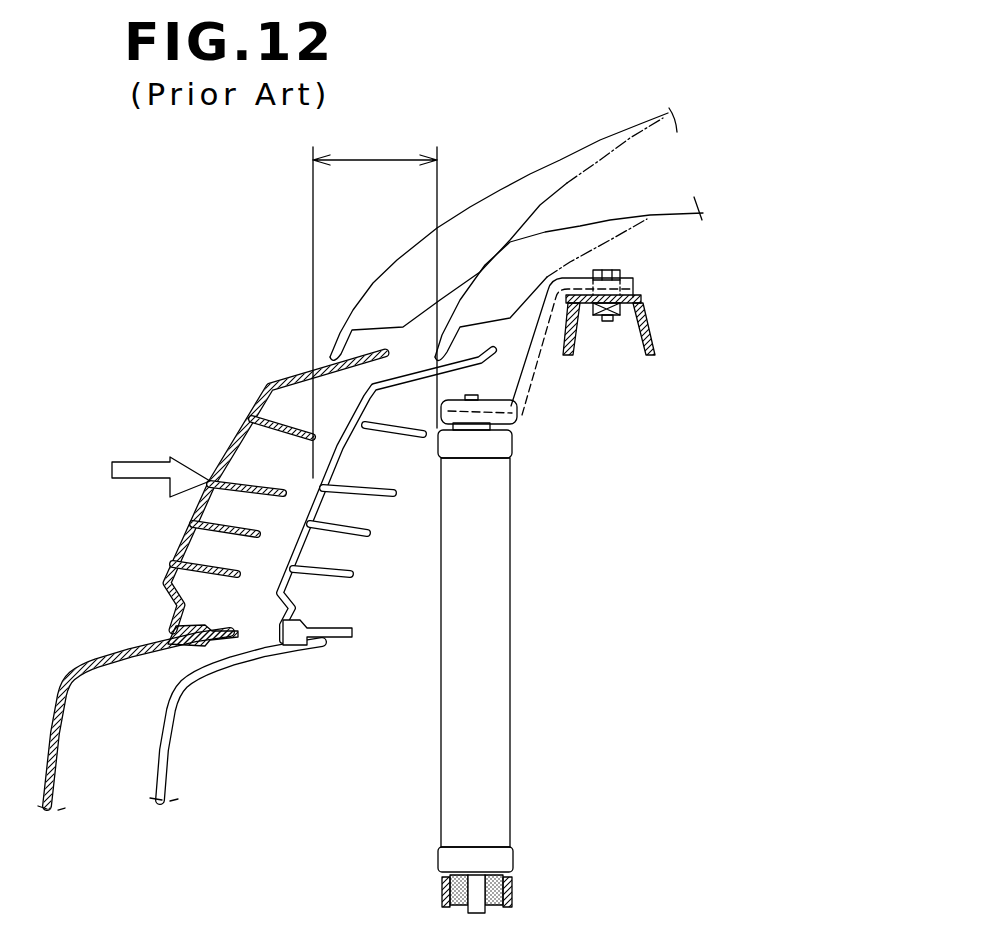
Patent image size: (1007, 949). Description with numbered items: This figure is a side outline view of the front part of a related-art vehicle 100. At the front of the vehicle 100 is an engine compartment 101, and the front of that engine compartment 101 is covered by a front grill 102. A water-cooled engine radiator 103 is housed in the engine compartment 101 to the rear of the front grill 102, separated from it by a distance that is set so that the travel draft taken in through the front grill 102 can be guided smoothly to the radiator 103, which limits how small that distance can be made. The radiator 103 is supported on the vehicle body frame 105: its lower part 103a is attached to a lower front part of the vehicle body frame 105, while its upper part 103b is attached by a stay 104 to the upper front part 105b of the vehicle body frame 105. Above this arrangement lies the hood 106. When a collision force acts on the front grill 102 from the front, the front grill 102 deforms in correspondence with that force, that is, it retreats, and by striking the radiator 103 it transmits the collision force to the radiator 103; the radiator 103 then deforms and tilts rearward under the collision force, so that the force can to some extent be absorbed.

The vehicle 100 is at (370, 424).
The engine compartment 101 is at (666, 589).
The front grill 102 is at (262, 380).
The water-cooled engine radiator 103 is at (543, 660).
The lower part 103a is at (507, 858).
The upper part 103b is at (505, 445).
The stay 104 is at (540, 373).
The vehicle body frame 105 is at (690, 356).
The upper front part 105b is at (653, 327).
The hood 106 is at (520, 185).